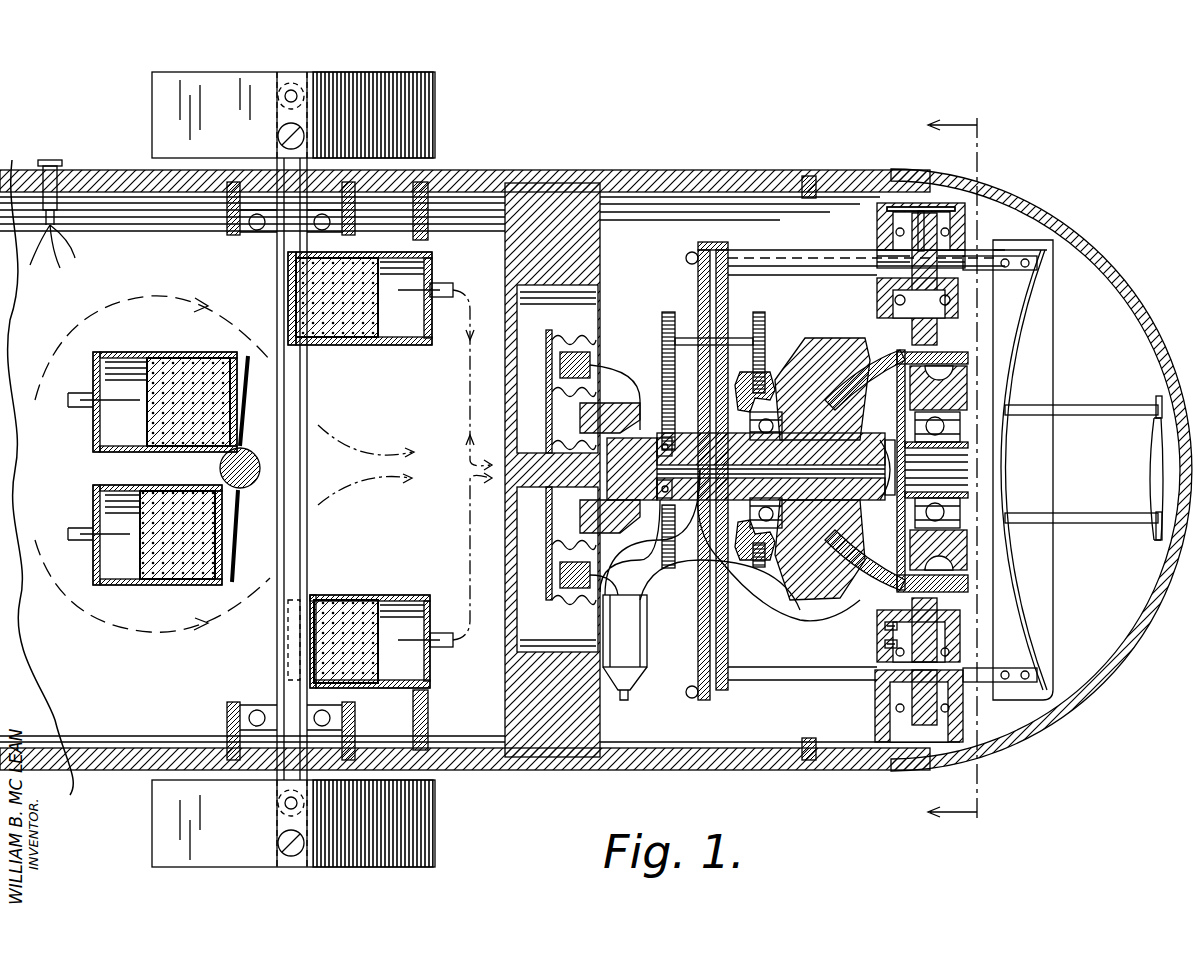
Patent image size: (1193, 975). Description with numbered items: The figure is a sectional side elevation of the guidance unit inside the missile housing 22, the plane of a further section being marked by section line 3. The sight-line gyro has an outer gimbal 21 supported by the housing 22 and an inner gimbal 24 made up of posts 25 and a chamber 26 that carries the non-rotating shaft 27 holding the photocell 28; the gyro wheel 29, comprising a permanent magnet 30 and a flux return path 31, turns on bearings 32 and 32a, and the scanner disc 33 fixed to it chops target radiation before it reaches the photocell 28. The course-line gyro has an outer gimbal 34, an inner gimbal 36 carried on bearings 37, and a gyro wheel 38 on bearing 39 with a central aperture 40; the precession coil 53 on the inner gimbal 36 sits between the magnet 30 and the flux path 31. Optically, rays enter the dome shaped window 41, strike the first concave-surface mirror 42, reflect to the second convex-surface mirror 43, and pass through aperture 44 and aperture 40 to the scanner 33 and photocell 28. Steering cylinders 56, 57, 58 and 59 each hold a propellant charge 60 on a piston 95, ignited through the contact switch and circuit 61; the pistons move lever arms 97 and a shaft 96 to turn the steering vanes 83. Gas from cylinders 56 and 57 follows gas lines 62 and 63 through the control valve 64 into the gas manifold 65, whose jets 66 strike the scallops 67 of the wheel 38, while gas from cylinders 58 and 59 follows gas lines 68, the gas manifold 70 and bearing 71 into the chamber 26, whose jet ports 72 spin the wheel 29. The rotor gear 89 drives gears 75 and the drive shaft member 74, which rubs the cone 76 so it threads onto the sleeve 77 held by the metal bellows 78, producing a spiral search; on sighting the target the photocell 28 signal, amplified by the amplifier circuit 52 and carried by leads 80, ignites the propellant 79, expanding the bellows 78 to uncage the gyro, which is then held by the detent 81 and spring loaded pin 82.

The section line 3- 3 is at (969, 470).
The outer gimbal 21 is at (877, 218).
The missile housing 22 is at (632, 171).
The inner gimbal 24 is at (702, 240).
The posts 25 is at (750, 256).
The chamber 26 is at (698, 282).
The non-rotating shaft 27 is at (690, 450).
The photocell 28 is at (875, 445).
The gyro wheel 29 is at (830, 330).
The permanent magnet 30 is at (830, 575).
The flux return path 31 is at (800, 620).
The bearing 32 is at (768, 420).
The bearing 32a is at (895, 478).
The scanner disc 33 is at (875, 500).
The outer gimbal 34 is at (950, 300).
The inner gimbal 36 is at (968, 350).
The bearings 37 is at (950, 300).
The gyro wheel 38 is at (968, 390).
The bearing 39 is at (940, 420).
The aperture 40 is at (985, 460).
The dome shaped window 41 is at (1039, 208).
The first concave-surface mirror 42 is at (1050, 578).
The second convex-surface mirror 43 is at (1150, 468).
The aperture 44 is at (1008, 450).
The amplifier circuit 52 is at (645, 670).
The precession coil 53 is at (830, 395).
The steering cylinder 56 is at (398, 568).
The steering cylinder 57 is at (395, 340).
The steering cylinder 58 is at (135, 352).
The steering cylinder 59 is at (130, 585).
The propellant charge 60 is at (350, 340).
The contact switch and circuit 61 is at (44, 160).
The gas lines 62 is at (470, 388).
The gas lines 63 is at (885, 635).
The control valve 64 is at (950, 630).
The gas manifold 65 is at (900, 358).
The jets 66 is at (910, 352).
The scallops 67 is at (958, 550).
The gas lines 68 is at (48, 392).
The gas manifold 70 is at (910, 210).
The bearing 71 is at (877, 250).
The jet ports 72 is at (745, 380).
The drive shaft member 74 is at (655, 520).
The gears 75 is at (668, 312).
The cone 76 is at (585, 414).
The sleeve 77 is at (585, 518).
The metal bellows 78 is at (556, 606).
The propellant 79 is at (578, 590).
The leads 80 is at (592, 362).
The detent 81 is at (560, 445).
The spring loaded pin 82 is at (552, 495).
The steering vanes 83 is at (412, 113).
The gear 89 is at (760, 568).
The piston 95 is at (320, 342).
The shaft 96 is at (220, 470).
The lever arms 97 is at (288, 275).